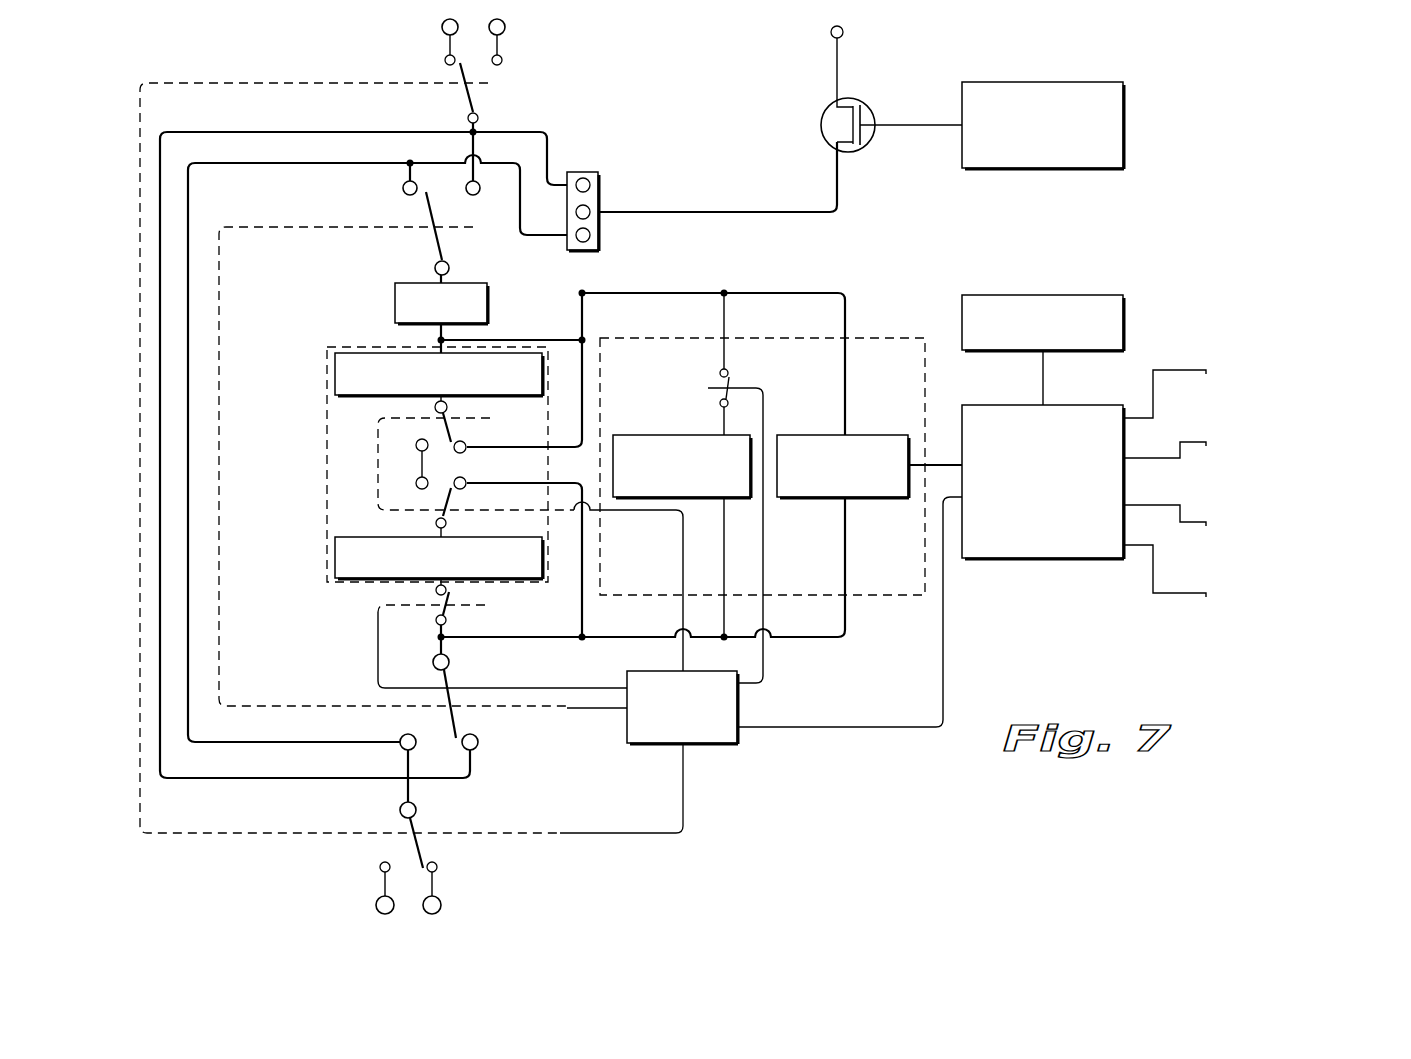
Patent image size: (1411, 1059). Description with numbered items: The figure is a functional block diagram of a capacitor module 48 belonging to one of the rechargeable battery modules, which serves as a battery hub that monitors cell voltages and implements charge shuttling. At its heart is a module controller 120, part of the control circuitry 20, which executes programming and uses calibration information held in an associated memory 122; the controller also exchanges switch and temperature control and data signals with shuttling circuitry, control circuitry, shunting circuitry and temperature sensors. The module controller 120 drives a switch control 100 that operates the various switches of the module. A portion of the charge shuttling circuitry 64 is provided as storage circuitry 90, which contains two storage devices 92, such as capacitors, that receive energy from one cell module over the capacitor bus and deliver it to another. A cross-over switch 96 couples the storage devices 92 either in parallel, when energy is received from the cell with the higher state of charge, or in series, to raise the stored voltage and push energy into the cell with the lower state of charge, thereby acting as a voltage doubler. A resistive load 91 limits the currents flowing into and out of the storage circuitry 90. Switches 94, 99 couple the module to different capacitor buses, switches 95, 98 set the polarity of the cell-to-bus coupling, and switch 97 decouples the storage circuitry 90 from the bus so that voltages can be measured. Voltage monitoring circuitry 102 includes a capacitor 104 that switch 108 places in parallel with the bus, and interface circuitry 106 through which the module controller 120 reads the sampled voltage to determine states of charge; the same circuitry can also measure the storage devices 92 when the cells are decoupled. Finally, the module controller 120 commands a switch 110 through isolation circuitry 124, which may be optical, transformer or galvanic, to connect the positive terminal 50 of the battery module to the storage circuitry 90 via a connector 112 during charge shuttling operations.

The control circuitry 20 is at (1003, 572).
The capacitor module 48 is at (1333, 117).
The positive terminal 50 is at (843, 38).
The charge shuttling circuitry 64 is at (295, 465).
The storage circuitry 90 is at (327, 447).
The resistive load 91 is at (488, 305).
The storage devices 92 is at (333, 375).
The switch 94 is at (425, 103).
The switch 95 is at (400, 210).
The cross-over switch 96 is at (408, 478).
The switch 97 is at (425, 613).
The switch 98 is at (428, 715).
The switch 99 is at (398, 846).
The switch control 100 is at (708, 747).
The voltage monitoring circuitry 102 is at (873, 338).
The capacitor 104 is at (655, 435).
The interface circuitry 106 is at (817, 435).
The switch 108 is at (706, 370).
The switch 110 is at (820, 125).
The connector 112 is at (583, 170).
The module controller 120 is at (1042, 562).
The memory 122 is at (1043, 295).
The isolation circuitry 124 is at (1130, 127).